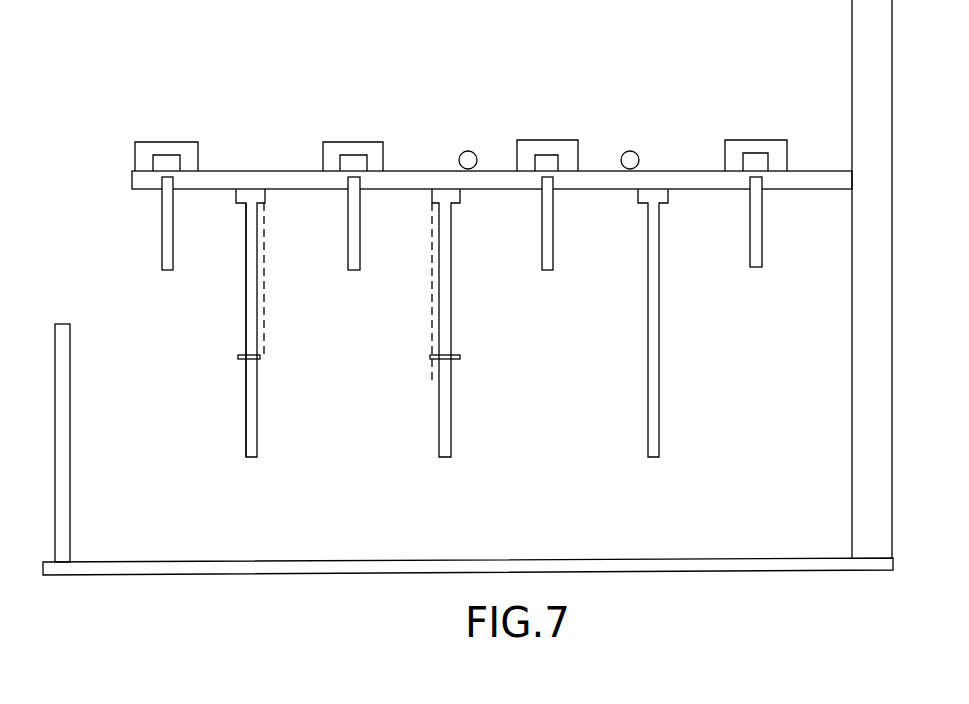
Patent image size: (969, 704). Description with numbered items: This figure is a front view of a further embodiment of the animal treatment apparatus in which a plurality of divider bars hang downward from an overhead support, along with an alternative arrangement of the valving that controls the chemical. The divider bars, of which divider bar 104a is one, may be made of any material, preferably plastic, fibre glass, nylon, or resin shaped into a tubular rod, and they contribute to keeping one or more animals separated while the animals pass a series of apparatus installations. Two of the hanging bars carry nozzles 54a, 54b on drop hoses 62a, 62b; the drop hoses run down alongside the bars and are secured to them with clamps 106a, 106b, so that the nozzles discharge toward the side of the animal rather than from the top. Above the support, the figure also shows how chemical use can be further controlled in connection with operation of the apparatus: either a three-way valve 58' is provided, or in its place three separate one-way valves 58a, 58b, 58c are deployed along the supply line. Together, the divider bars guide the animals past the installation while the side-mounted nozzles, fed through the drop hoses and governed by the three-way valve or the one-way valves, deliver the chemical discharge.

The nozzle 54a is at (271, 382).
The nozzle 54b is at (421, 380).
The three-way valve 58' is at (562, 121).
The one-way valve 58a is at (558, 160).
The one-way valve 58b is at (470, 151).
The one-way valve 58c is at (640, 157).
The drop hose 62a is at (268, 283).
The drop hose 62b is at (430, 310).
The divider bar 104a is at (245, 291).
The clamp 106a is at (261, 357).
The clamp 106b is at (461, 357).